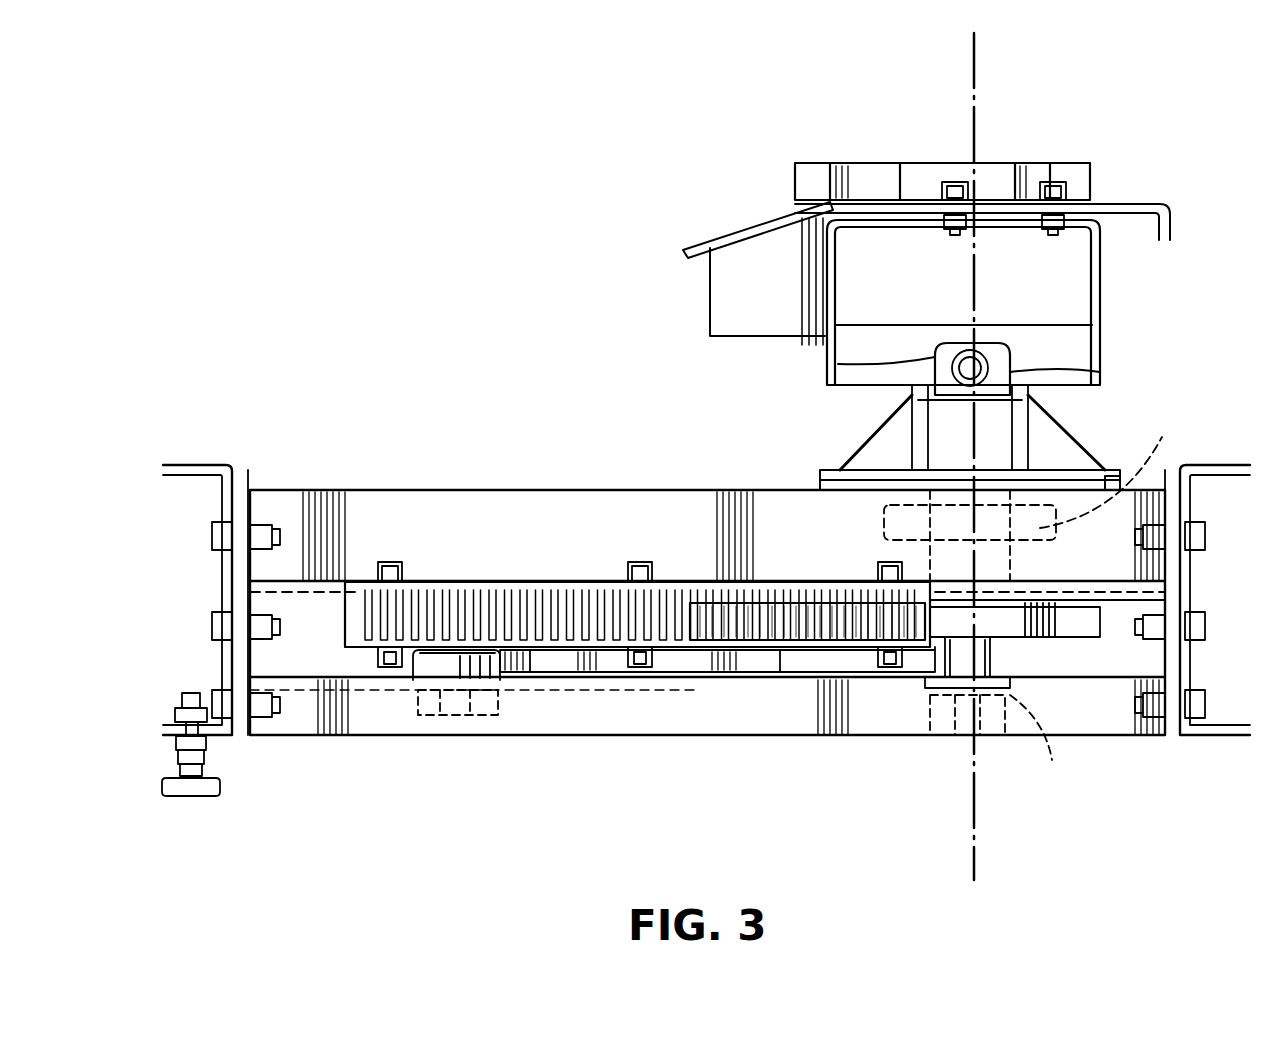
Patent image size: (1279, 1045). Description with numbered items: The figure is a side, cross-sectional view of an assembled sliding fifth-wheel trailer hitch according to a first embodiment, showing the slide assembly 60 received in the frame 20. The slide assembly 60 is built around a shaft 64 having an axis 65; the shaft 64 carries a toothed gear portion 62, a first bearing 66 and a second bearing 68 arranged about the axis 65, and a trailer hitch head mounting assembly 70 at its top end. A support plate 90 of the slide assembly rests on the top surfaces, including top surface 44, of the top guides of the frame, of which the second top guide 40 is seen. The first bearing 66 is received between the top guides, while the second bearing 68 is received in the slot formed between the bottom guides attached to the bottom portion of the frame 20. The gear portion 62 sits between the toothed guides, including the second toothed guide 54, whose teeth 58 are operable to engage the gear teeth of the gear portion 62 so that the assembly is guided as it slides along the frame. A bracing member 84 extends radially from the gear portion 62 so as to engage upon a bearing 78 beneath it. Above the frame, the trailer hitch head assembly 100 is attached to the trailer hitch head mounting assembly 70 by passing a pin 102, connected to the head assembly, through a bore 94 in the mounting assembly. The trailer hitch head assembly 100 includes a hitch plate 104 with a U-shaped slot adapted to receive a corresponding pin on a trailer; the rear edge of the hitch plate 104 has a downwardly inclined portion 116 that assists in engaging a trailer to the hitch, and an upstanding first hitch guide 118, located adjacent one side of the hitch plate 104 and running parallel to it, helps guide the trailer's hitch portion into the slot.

The frame 20 is at (340, 490).
The second top guide 40 is at (545, 505).
The top surface 44 is at (618, 490).
The second toothed guide 54 is at (345, 600).
The teeth 58 is at (455, 600).
The slide assembly 60 is at (825, 408).
The toothed gear portion 62 is at (822, 600).
The shaft 64 is at (1000, 655).
The axis 65 is at (984, 855).
The first bearing 66 is at (1031, 498).
The second bearing 68 is at (1001, 745).
The trailer hitch head mounting assembly 70 is at (1072, 424).
The bearing 78 is at (440, 665).
The bracing member 84 is at (610, 655).
The support plate 90 is at (858, 490).
The bore 94 is at (990, 365).
The trailer hitch head assembly 100 is at (1105, 270).
The pin 102 is at (838, 362).
The hitch plate 104 is at (1130, 202).
The downwardly inclined portion 116 is at (740, 230).
The first hitch guide 118 is at (945, 163).